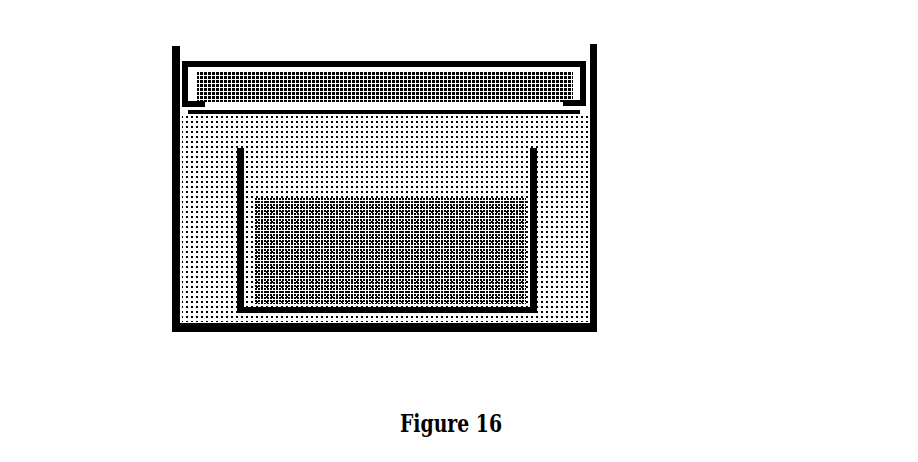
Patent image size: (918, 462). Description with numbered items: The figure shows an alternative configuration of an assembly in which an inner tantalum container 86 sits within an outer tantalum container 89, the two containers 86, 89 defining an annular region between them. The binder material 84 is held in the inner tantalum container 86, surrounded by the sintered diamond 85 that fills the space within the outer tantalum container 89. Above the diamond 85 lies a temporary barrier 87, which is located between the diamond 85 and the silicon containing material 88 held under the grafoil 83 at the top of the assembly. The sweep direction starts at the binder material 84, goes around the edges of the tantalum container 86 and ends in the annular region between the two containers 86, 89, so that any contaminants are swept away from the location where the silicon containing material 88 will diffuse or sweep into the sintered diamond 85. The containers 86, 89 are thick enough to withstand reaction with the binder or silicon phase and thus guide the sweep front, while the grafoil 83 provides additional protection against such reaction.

The grafoil 83 is at (588, 82).
The binder material 84 is at (390, 250).
The sintered diamond 85 is at (462, 155).
The tantalum container 86 is at (538, 255).
The temporary barrier 87 is at (535, 118).
The silicon containing material 88 is at (240, 84).
The tantalum container 89 is at (598, 310).